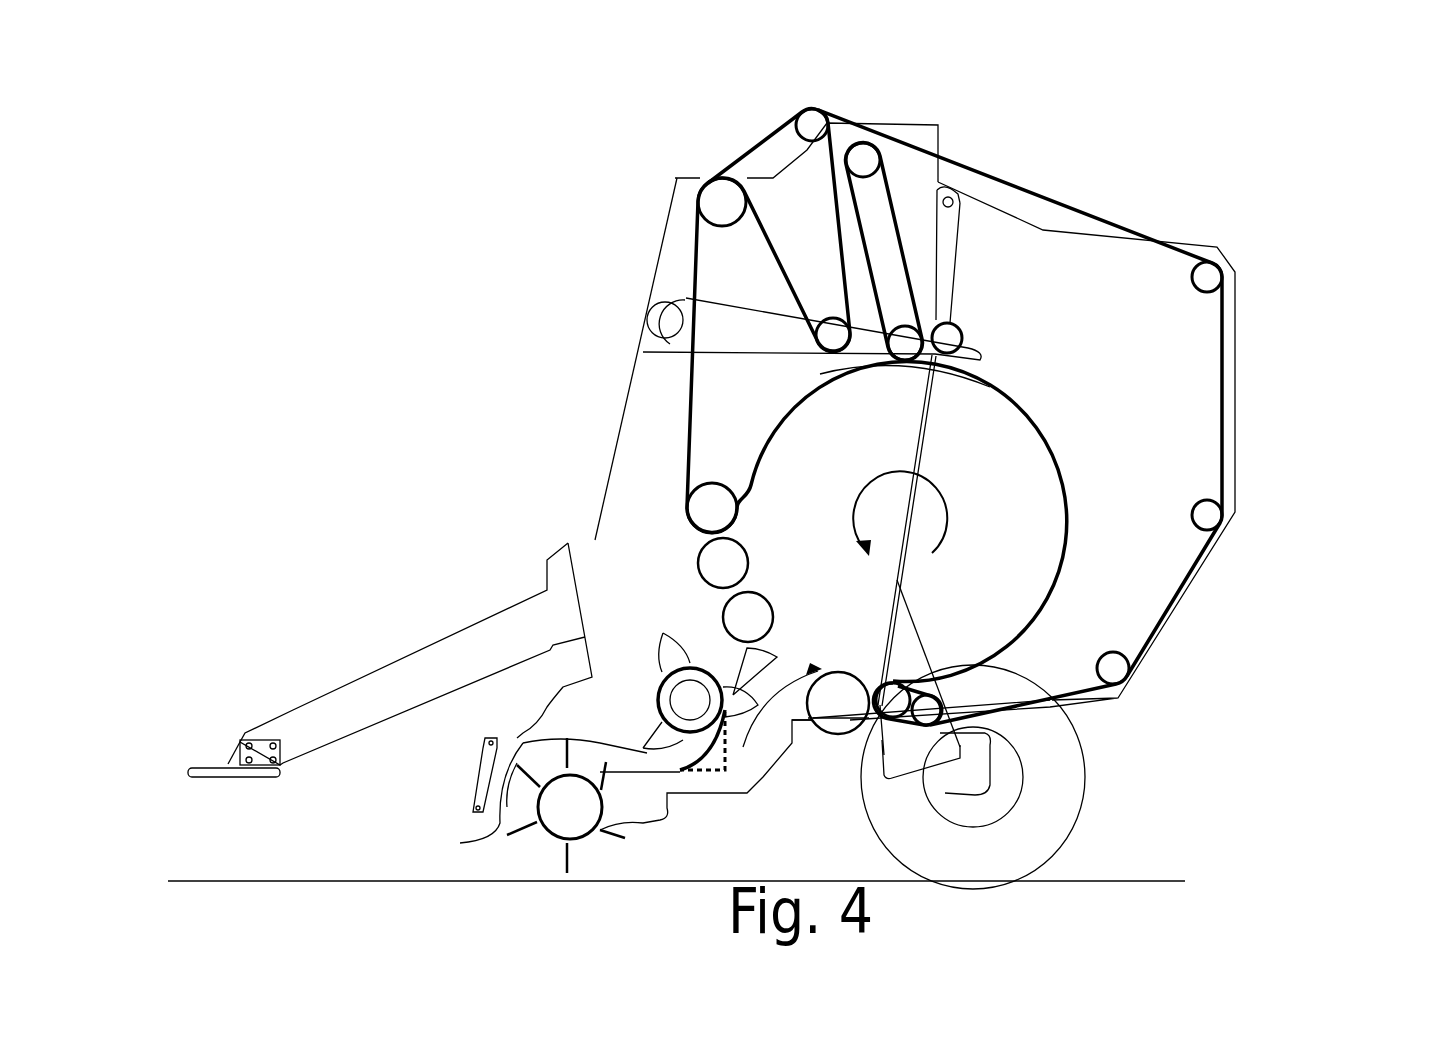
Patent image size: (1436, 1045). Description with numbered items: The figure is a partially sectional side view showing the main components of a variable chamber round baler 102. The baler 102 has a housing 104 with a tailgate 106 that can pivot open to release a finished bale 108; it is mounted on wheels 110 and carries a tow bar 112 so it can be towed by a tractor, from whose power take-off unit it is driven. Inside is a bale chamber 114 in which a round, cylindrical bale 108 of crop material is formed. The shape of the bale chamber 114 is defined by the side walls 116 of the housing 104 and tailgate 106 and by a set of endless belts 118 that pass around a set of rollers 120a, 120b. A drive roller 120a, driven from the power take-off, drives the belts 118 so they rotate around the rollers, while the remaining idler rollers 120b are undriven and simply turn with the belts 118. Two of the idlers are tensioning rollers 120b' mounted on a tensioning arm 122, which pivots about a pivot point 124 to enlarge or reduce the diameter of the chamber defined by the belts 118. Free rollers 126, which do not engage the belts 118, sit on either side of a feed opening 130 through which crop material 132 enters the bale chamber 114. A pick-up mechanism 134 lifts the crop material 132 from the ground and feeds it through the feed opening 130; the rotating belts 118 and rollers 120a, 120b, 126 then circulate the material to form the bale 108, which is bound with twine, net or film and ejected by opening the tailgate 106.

The variable chamber round baler 102 is at (752, 160).
The housing 104 is at (622, 415).
The tailgate 106 is at (1113, 237).
The bale 108 is at (1010, 498).
The wheels 110 is at (1043, 803).
The tow bar 112 is at (470, 640).
The bale chamber 114 is at (762, 446).
The side walls 116 is at (735, 385).
The endless belts 118 is at (1085, 693).
The drive roller 120a is at (712, 508).
The idler rollers 120b is at (943, 331).
The tensioning rollers 120b' is at (1061, 393).
The tensioning arm 122 is at (737, 323).
The pivot point 124 is at (658, 322).
The free rollers 126 is at (723, 565).
The feed opening 130 is at (798, 663).
The crop material 132 is at (460, 843).
The pick-up mechanism 134 is at (570, 807).